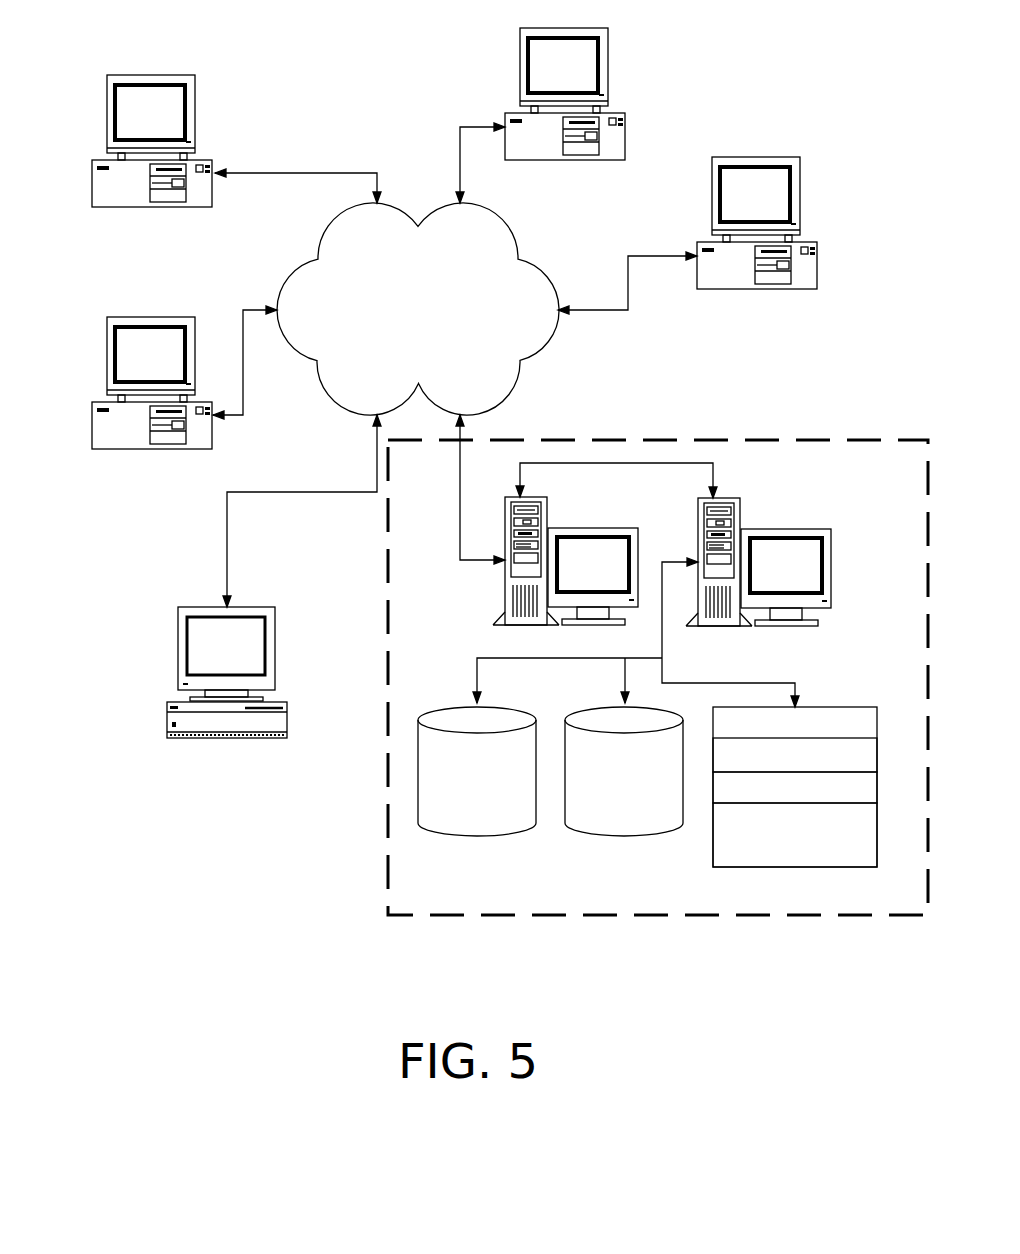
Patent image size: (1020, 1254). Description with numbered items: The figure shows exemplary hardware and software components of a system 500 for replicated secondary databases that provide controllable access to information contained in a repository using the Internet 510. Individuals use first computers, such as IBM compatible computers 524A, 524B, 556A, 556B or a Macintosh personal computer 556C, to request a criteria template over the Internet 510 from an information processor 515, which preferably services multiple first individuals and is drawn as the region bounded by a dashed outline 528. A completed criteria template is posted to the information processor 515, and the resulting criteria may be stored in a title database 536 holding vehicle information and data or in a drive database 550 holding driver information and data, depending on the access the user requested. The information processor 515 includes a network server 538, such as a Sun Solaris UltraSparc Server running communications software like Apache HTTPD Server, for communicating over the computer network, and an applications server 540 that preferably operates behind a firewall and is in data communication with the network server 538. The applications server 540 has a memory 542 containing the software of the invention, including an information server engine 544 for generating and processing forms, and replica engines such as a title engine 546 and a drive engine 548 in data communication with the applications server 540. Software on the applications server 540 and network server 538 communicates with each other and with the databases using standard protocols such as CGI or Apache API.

The system 500 is at (257, 868).
The Internet 510 is at (540, 360).
The information processor 515 is at (912, 478).
The IBM compatible computer 524A is at (625, 137).
The IBM compatible computer 524B is at (817, 271).
The server site boundary 528 is at (694, 437).
The title database 536 is at (477, 835).
The network server 538 is at (545, 497).
The applications server 540 is at (736, 498).
The memory 542 is at (833, 707).
The information server engine 544 is at (795, 867).
The title engine 546 is at (877, 755).
The drive engine 548 is at (877, 787).
The drive database 550 is at (624, 835).
The IBM compatible computer 556A is at (213, 186).
The IBM compatible computer 556B is at (213, 428).
The Macintosh personal computer 556C is at (287, 720).